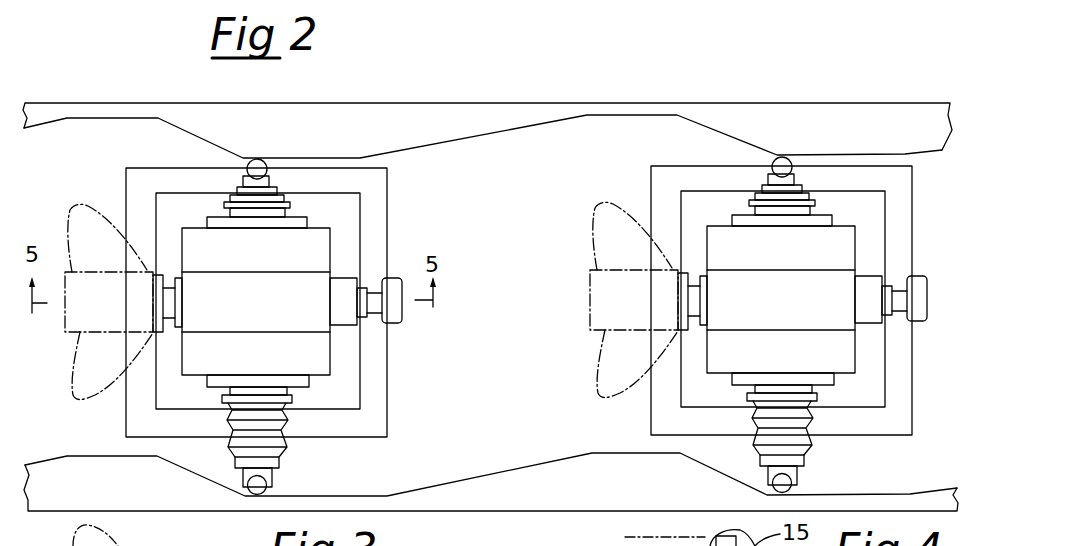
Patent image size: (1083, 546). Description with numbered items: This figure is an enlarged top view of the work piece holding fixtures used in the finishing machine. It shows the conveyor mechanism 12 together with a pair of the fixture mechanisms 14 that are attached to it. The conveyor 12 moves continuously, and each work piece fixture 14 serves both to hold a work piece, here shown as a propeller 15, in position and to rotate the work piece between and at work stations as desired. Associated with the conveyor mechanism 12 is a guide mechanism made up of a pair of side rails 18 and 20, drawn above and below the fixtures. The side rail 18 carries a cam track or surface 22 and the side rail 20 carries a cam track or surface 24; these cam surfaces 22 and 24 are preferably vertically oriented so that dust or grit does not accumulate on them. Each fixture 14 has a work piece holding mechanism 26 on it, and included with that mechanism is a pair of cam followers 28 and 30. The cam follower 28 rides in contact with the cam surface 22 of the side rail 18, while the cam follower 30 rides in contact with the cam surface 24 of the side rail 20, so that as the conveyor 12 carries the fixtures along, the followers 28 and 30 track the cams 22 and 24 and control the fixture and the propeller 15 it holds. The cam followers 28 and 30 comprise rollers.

The conveyor 12 is at (512, 348).
The work piece fixture 14 is at (378, 242).
The propeller 15 is at (86, 206).
The side rail 18 is at (363, 111).
The side rail 20 is at (535, 492).
The cam track or surface 22 is at (478, 141).
The cam track or surface 24 is at (477, 477).
The work piece holding mechanism 26 is at (338, 232).
The cam follower 28 is at (257, 159).
The cam follower 30 is at (257, 490).